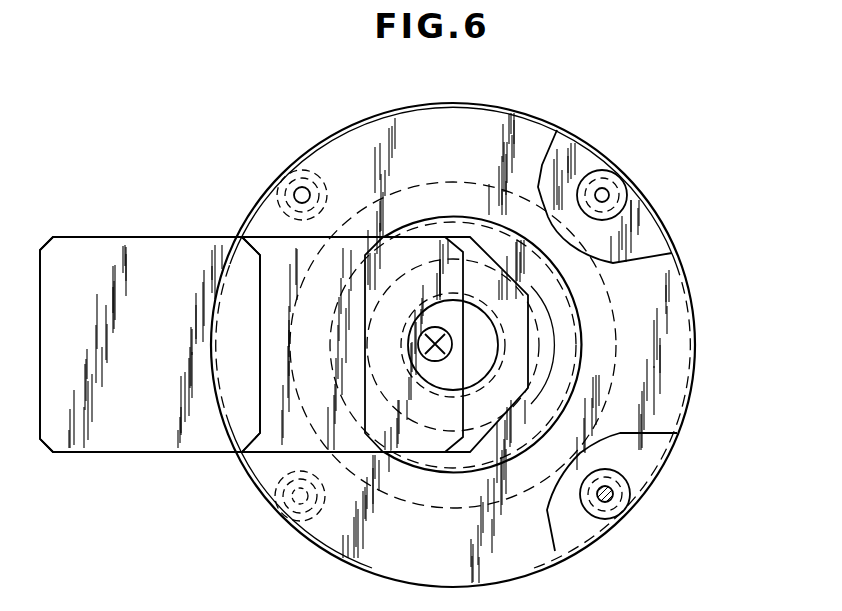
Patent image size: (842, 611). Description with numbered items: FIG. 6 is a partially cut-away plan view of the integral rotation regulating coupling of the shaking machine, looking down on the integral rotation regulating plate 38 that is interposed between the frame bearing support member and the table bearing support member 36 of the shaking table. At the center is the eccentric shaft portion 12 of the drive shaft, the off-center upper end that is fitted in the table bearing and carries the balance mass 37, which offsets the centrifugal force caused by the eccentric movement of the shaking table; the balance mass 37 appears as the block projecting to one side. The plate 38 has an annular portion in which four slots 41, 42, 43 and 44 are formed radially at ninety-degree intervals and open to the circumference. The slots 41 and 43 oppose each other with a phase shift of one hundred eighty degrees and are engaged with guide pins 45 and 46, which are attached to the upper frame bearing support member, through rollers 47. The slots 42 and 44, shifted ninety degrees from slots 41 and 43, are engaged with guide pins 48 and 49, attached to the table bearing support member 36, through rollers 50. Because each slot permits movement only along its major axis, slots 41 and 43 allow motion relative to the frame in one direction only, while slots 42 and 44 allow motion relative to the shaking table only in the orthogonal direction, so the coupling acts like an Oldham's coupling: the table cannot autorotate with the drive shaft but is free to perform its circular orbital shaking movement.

The eccentric shaft portion 12 is at (493, 353).
The table bearing support member 36 is at (680, 357).
The balance mass 37 is at (150, 250).
The integral rotation regulating plate 38 is at (652, 243).
The slot 41 is at (276, 510).
The slot 42 is at (280, 190).
The slot 43 is at (622, 167).
The slot 44 is at (617, 522).
The guide pin 45 is at (282, 518).
The guide pin 46 is at (601, 189).
The roller 47 is at (630, 210).
The guide pin 48 is at (300, 188).
The guide pin 49 is at (613, 500).
The roller 50 is at (330, 172).